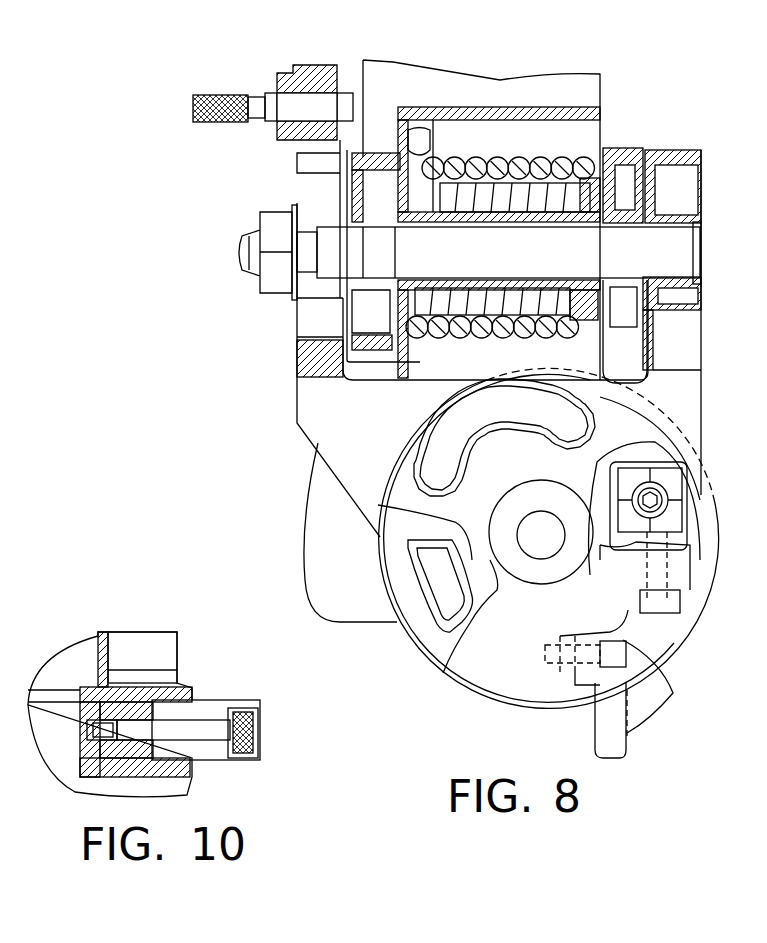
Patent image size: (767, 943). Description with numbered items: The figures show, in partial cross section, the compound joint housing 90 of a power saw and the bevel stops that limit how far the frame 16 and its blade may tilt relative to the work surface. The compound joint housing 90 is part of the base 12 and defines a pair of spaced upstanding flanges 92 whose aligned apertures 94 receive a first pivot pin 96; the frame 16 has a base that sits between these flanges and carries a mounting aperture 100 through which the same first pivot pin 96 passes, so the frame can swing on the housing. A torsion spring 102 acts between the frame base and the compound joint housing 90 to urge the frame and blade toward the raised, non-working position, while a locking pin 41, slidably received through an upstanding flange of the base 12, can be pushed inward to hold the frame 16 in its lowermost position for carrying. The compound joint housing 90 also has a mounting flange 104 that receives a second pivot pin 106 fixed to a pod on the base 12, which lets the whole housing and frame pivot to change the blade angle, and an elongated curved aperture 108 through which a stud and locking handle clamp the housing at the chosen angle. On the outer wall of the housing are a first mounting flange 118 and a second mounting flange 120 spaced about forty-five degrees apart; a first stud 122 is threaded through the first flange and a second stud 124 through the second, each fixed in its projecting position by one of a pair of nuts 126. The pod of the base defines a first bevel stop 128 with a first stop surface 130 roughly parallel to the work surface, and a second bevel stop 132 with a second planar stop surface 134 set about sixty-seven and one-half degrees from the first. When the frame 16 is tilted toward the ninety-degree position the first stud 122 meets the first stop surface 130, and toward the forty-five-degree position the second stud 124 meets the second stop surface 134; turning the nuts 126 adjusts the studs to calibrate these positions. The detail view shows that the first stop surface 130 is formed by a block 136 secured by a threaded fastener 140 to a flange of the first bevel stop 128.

In FIG. 8, the base 12 is at (452, 691).
In FIG. 8, the frame 16 is at (452, 58).
In FIG. 8, the locking pin 41 is at (238, 96).
In FIG. 8, the compound joint housing 90 is at (406, 656).
In FIG. 8, the upstanding flanges 92 is at (335, 65).
In FIG. 8, the aligned apertures 94 is at (290, 280).
In FIG. 8, the first pivot pin 96 is at (682, 237).
In FIG. 8, the mounting aperture 100 is at (612, 232).
In FIG. 8, the torsion spring 102 is at (447, 158).
In FIG. 8, the mounting flange 104 is at (497, 528).
In FIG. 8, the second pivot pin 106 is at (556, 508).
In FIG. 8, the elongated curved aperture 108 is at (512, 395).
In FIG. 8, the first mounting flange 118 is at (690, 592).
In FIG. 8, the second mounting flange 120 is at (603, 706).
In FIG. 8, the first stud 122 is at (680, 633).
In FIG. 8, the second stud 124 is at (674, 694).
In FIG. 8, the nuts 126 is at (615, 611).
In FIG. 10, the first bevel stop 128 is at (196, 677).
In FIG. 10, the first stop surface 130 is at (213, 760).
In FIG. 8, the second bevel stop 132 is at (406, 582).
In FIG. 8, the second stop surface 134 is at (478, 610).
In FIG. 10, the block 136 is at (205, 702).
In FIG. 10, the threaded fastener 140 is at (248, 750).